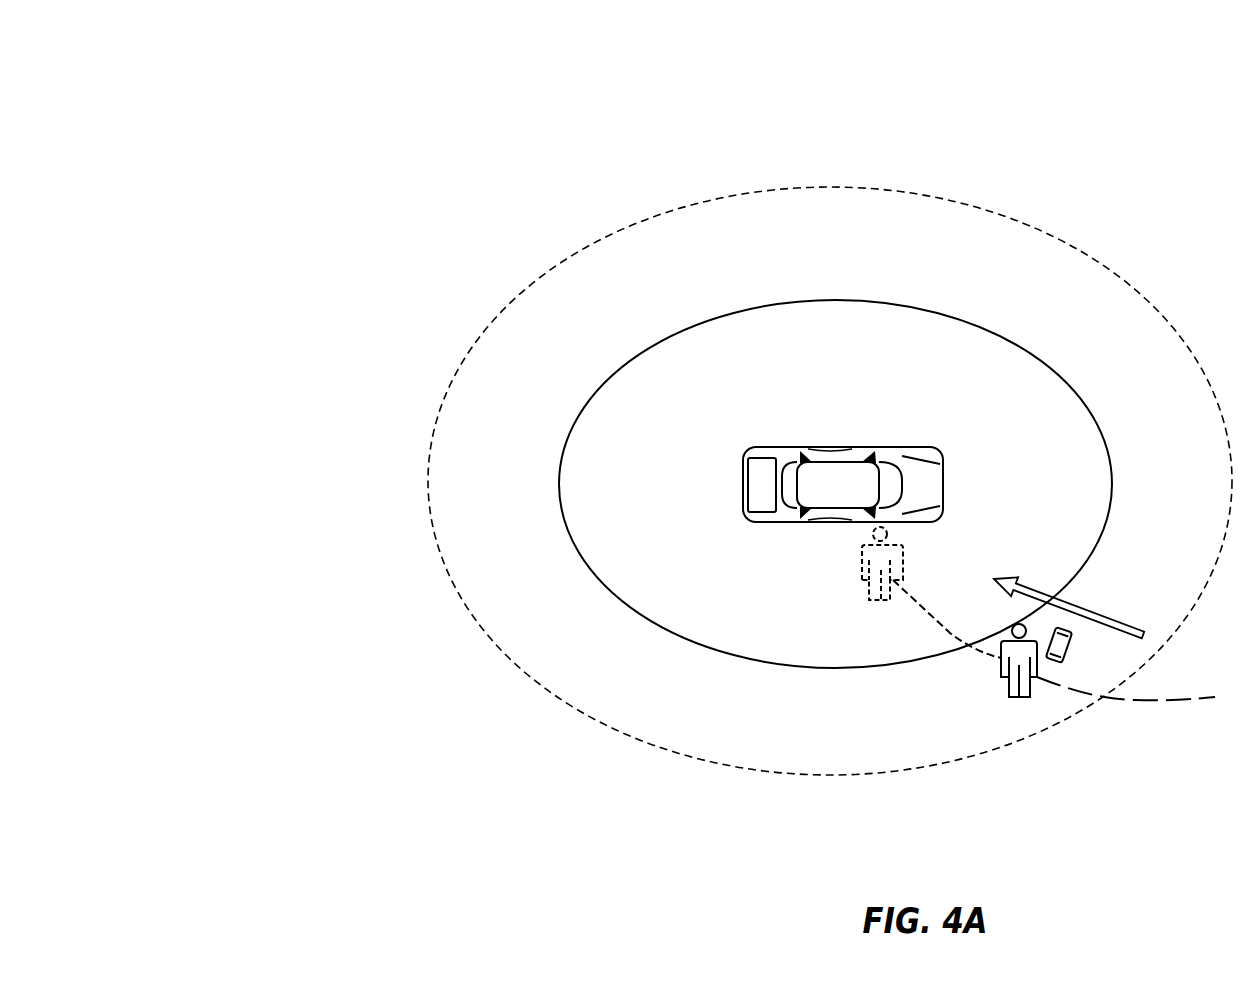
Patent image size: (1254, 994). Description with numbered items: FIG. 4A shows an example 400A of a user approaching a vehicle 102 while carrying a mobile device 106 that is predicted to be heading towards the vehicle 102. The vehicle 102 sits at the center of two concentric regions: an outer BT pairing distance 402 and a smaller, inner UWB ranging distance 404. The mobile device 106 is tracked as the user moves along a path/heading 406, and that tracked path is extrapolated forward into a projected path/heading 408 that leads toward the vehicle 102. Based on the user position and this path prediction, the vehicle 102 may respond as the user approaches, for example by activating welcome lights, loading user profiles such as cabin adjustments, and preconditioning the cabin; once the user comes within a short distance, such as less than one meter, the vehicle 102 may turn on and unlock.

The example 400A is at (397, 46).
The vehicle 102 is at (843, 484).
The mobile device 106 is at (1076, 645).
The BT pairing distance 402 is at (1058, 238).
The UWB ranging distance 404 is at (705, 322).
The path/heading 406 is at (1130, 700).
The projected path/heading 408 is at (950, 632).